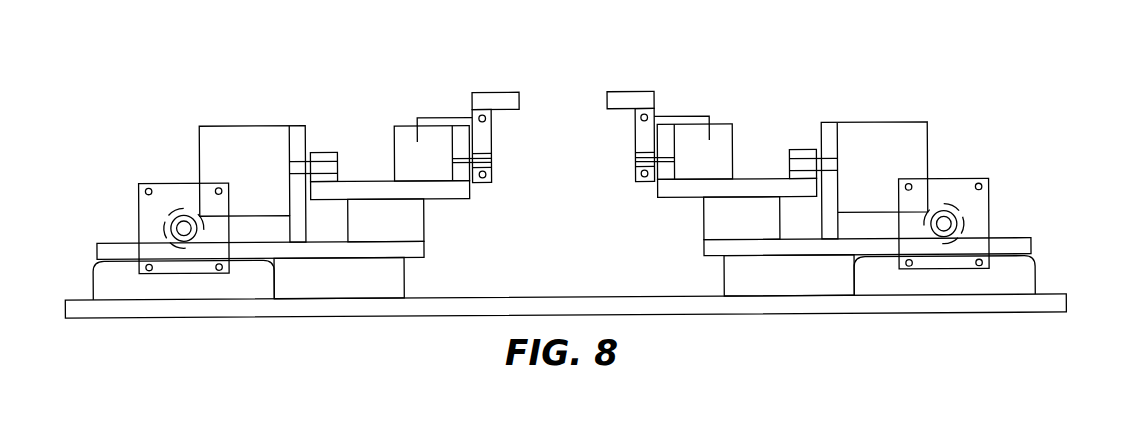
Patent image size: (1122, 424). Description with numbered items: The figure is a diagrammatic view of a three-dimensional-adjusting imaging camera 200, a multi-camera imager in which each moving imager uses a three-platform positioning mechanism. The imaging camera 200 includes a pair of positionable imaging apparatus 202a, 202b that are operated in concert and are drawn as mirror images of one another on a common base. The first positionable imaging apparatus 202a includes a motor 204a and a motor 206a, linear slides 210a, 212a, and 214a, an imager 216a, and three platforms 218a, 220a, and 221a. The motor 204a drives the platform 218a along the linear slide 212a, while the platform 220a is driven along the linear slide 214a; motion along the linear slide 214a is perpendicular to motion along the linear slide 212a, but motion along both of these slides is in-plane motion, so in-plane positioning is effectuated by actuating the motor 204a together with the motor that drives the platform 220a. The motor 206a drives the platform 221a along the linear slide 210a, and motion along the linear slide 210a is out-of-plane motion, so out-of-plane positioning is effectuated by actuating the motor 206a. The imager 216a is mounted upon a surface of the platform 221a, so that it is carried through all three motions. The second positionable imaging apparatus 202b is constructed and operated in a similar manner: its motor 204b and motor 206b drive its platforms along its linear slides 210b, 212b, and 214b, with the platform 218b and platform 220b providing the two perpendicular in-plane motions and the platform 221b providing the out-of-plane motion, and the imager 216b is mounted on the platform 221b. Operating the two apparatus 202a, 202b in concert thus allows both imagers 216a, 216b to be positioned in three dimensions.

The three-dimensional-adjusting imaging camera 200 is at (112, 87).
The positionable imaging apparatus 202a is at (127, 209).
The positionable imaging apparatus 202b is at (1003, 207).
The motor 204a is at (245, 169).
The motor 204b is at (858, 180).
The motor 206a is at (430, 172).
The motor 206b is at (710, 172).
The linear slide 210a is at (417, 117).
The linear slide 210b is at (711, 116).
The linear slide 212a is at (385, 234).
The linear slide 212b is at (750, 232).
The linear slide 214a is at (355, 292).
The linear slide 214b is at (780, 289).
The imager 216a is at (487, 92).
The imager 216b is at (630, 91).
The platform 218a is at (433, 200).
The platform 218b is at (695, 200).
The platform 220a is at (97, 250).
The platform 220b is at (1030, 245).
The platform 221a is at (473, 109).
The platform 221b is at (655, 110).